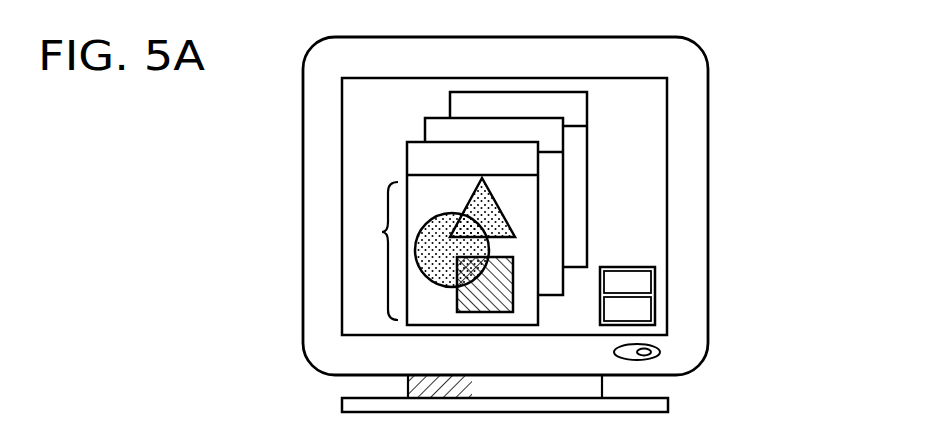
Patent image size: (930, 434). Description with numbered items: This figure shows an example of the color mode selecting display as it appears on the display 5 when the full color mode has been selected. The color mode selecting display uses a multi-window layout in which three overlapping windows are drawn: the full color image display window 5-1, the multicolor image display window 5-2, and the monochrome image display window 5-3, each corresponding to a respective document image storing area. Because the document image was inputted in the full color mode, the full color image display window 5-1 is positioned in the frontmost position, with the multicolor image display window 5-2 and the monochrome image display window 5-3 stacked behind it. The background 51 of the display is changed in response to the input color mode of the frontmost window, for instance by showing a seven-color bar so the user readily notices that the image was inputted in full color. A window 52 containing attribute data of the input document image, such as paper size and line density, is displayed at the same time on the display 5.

The display 5 is at (620, 37).
The background 51 is at (653, 168).
The window 52 is at (655, 282).
The full color image display window 5-1 is at (372, 232).
The multicolor image display window 5-2 is at (563, 237).
The monochrome image display window 5-3 is at (450, 104).